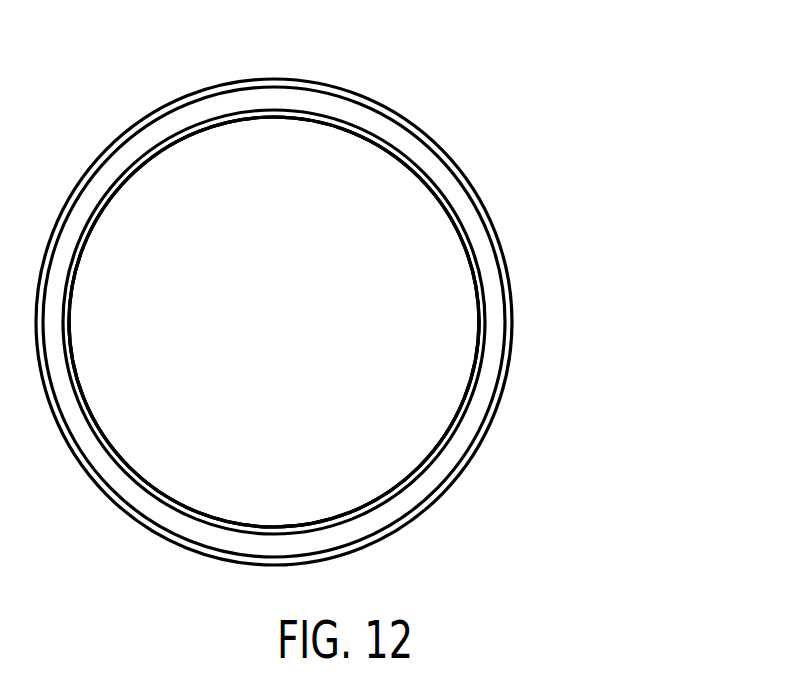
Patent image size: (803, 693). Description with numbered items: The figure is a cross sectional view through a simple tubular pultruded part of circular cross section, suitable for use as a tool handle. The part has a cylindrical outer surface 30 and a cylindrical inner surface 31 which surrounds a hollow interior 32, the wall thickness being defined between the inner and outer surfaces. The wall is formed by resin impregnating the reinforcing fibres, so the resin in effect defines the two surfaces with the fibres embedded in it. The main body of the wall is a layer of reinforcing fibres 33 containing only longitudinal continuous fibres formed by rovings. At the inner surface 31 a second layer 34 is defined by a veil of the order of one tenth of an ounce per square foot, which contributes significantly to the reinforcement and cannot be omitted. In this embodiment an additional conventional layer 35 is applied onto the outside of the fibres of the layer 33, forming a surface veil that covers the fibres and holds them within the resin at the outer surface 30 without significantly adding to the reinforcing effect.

The cylindrical outer surface 30 is at (158, 108).
The cylindrical inner surface 31 is at (125, 190).
The hollow interior 32 is at (290, 392).
The layer of reinforcing fibres 33 is at (420, 155).
The second layer 34 is at (450, 218).
The additional conventional layer 35 is at (322, 90).